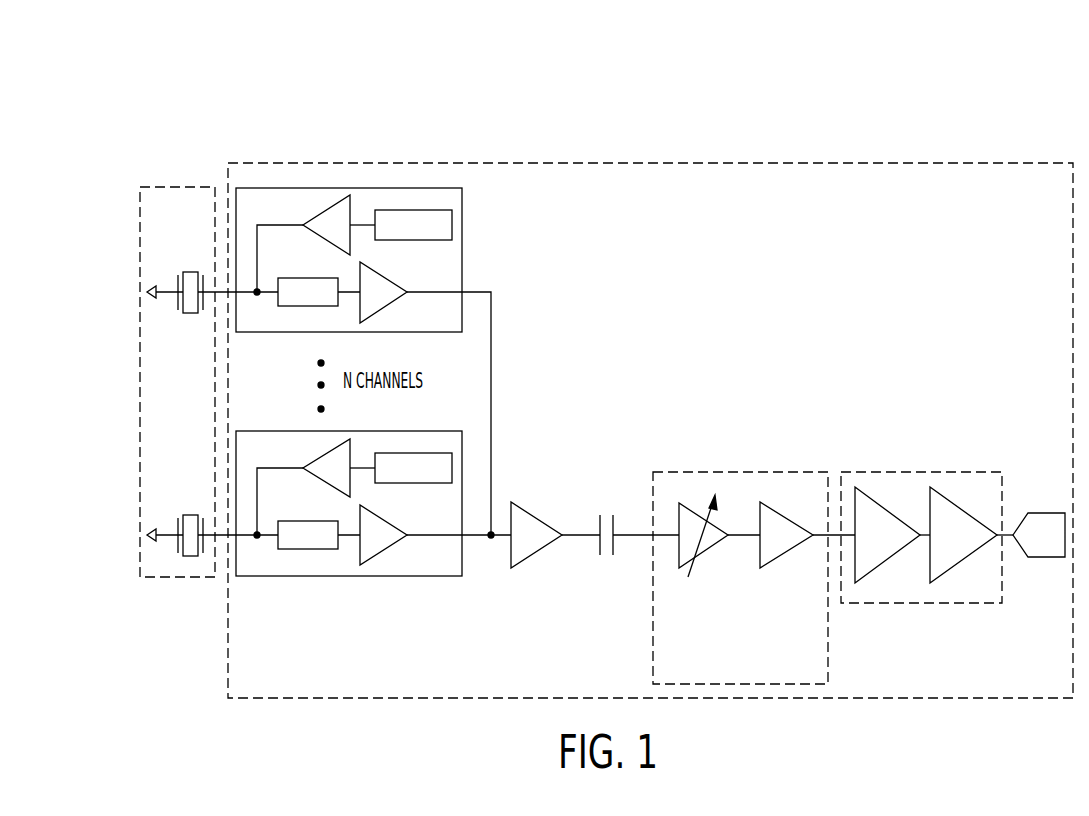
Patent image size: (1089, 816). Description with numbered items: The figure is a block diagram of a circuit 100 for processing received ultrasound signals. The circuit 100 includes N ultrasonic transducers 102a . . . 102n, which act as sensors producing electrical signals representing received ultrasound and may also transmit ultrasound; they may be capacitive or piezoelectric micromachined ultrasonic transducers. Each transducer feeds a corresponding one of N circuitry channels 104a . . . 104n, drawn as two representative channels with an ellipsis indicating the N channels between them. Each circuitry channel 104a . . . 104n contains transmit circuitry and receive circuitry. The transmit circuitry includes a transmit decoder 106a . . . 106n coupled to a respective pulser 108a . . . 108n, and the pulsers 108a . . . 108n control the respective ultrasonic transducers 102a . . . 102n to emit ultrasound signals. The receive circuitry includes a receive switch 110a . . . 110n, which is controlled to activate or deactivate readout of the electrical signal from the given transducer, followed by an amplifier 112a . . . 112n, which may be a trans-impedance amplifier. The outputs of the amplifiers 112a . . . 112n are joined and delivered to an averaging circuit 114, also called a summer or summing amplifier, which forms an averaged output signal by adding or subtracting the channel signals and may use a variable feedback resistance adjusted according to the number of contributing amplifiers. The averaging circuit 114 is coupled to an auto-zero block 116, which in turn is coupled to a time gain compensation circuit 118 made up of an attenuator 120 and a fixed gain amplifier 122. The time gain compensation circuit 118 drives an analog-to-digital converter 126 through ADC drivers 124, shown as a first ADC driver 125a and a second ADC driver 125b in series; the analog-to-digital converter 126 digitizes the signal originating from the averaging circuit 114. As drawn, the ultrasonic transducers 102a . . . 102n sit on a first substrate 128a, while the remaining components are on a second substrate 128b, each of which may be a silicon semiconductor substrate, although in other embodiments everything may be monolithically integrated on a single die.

The circuit 100 is at (214, 110).
The ultrasonic transducer 102a is at (192, 270).
The ultrasonic transducer 102n is at (192, 515).
The circuitry channel 104a is at (463, 242).
The circuitry channel 104n is at (270, 578).
The transmit decoder 106a is at (397, 210).
The transmit decoder 106n is at (413, 453).
The pulser 108a is at (335, 197).
The pulser 108n is at (352, 447).
The receive switch 110a is at (290, 307).
The receive switch 110n is at (318, 552).
The amplifier 112a is at (385, 305).
The amplifier 112n is at (372, 560).
The averaging circuit 114 is at (535, 513).
The auto-zero block 116 is at (600, 557).
The time gain compensation circuit 118 is at (753, 470).
The attenuator 120 is at (673, 507).
The fixed gain amplifier 122 is at (790, 552).
The ADC drivers 124 is at (867, 470).
The first ADC driver 125a is at (860, 582).
The second ADC driver 125b is at (935, 582).
The analog-to-digital converter 126 is at (1038, 558).
The first substrate 128a is at (175, 578).
The second substrate 128b is at (593, 162).